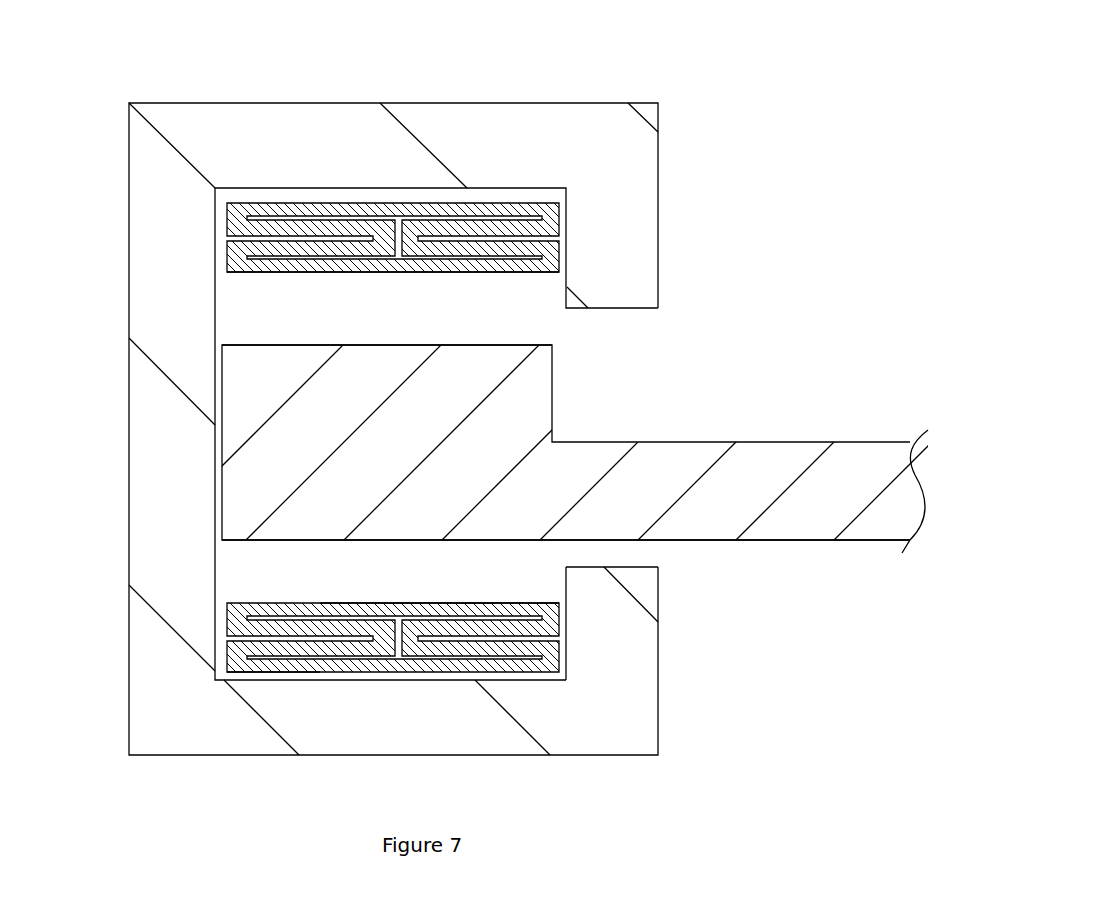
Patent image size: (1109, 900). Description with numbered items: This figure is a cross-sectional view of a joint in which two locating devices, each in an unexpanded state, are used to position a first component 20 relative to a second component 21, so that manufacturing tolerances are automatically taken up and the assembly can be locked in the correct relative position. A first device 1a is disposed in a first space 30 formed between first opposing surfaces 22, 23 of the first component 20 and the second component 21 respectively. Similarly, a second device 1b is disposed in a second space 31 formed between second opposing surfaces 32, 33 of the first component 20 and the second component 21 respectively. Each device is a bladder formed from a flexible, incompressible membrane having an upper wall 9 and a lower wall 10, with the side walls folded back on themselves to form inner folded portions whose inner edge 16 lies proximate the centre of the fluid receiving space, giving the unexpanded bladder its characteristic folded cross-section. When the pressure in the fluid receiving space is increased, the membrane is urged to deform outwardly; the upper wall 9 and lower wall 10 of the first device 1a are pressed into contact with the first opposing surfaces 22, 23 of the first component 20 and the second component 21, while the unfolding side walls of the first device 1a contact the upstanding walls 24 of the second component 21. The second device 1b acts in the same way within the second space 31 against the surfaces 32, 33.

The second component 21 is at (425, 120).
The second opposing surface of the second component 33 is at (265, 186).
The first opposing surface of the second component 23 is at (438, 680).
The upstanding walls 24 is at (215, 452).
The first component 20 is at (490, 397).
The second opposing surface of the first component 32 is at (263, 345).
The first opposing surface of the first component 22 is at (457, 542).
The upper wall 9 is at (420, 418).
The second device 1b is at (487, 236).
The first device 1a is at (550, 658).
The inner edge 16 is at (553, 257).
The lower wall 10 is at (525, 273).
The second space 31 is at (252, 304).
The first space 30 is at (256, 564).